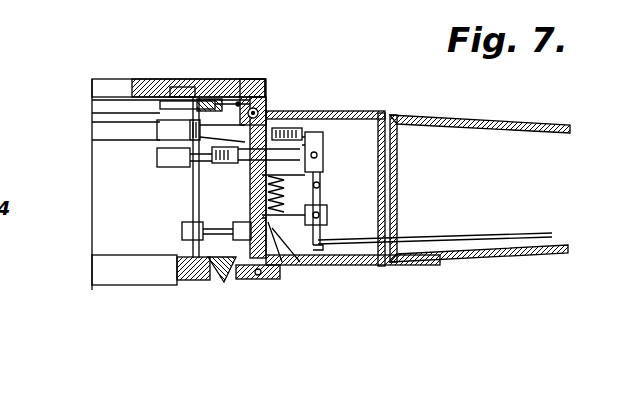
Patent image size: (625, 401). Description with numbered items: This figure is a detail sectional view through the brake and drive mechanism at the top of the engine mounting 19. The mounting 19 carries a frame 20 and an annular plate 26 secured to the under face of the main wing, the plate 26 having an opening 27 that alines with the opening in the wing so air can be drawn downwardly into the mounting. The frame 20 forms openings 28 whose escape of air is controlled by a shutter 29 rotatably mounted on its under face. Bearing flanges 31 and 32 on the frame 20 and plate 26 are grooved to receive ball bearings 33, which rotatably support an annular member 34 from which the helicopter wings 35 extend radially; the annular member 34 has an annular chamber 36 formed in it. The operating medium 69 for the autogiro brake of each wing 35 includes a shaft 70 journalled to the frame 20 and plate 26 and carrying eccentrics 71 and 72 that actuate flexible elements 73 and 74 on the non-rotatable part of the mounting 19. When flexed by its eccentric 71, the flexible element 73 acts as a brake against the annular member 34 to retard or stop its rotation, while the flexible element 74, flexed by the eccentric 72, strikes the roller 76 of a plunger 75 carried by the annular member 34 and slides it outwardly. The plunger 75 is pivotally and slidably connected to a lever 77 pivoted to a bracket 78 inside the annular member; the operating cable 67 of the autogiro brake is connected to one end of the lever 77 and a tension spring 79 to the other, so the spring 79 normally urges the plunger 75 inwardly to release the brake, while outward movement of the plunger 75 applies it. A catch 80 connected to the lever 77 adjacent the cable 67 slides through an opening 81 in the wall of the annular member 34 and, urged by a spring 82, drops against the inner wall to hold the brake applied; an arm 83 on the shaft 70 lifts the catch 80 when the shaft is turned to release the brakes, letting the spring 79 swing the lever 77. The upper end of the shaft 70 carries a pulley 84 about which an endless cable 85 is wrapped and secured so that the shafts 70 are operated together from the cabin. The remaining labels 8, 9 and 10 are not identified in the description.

The housing wall 8 is at (92, 100).
The housing section 9 is at (92, 146).
The housing section 10 is at (92, 211).
The mounting 19 is at (157, 79).
The frame 20 is at (129, 272).
The annular plate 26 is at (210, 80).
The opening 27 is at (128, 90).
The openings 28 is at (100, 270).
The shutter 29 is at (163, 285).
The bearing flange 31 is at (282, 265).
The bearing flange 32 is at (266, 102).
The ball bearings 33 is at (285, 92).
The annular member 34 is at (242, 177).
The helicopter wings 35 is at (548, 125).
The annular chamber 36 is at (386, 149).
The operating cable 67 is at (494, 237).
The operating medium 69 is at (192, 184).
The shaft 70 is at (192, 211).
The eccentric 71 is at (165, 113).
The eccentric 72 is at (157, 156).
The flexible element 73 is at (250, 97).
The flexible element 74 is at (290, 128).
The plunger 75 is at (345, 113).
The roller 76 is at (256, 168).
The lever 77 is at (380, 162).
The bracket 78 is at (297, 187).
The tension spring 79 is at (323, 132).
The catch 80 is at (327, 222).
The opening 81 is at (307, 262).
The spring 82 is at (322, 257).
The arm 83 is at (232, 280).
The pulleys 84 is at (232, 80).
The endless cable 85 is at (177, 101).